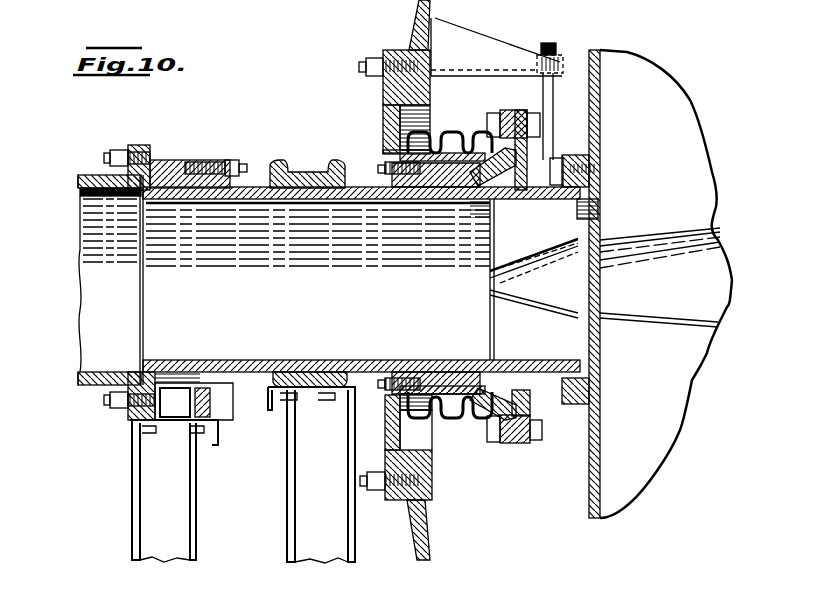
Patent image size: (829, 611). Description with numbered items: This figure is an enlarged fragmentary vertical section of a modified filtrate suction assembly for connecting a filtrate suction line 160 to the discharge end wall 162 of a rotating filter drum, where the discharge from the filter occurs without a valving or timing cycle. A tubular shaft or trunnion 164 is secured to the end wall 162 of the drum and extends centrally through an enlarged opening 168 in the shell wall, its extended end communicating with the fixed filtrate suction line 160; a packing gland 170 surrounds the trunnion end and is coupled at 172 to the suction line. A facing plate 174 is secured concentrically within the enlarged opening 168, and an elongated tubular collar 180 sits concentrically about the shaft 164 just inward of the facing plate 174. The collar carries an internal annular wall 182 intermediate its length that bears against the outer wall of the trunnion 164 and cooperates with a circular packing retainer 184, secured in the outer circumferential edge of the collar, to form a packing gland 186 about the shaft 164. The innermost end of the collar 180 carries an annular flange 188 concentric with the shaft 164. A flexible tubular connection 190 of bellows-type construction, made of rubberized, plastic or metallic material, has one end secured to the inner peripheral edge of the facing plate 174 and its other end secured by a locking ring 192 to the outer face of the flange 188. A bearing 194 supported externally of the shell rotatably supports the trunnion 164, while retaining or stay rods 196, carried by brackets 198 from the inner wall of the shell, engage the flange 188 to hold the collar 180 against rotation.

The filtrate suction line 160 is at (78, 186).
The discharge end wall of the rotary drum 162 is at (600, 193).
The tubular shaft or trunnion 164 is at (313, 205).
The enlarged opening 168 is at (440, 447).
The packing gland 170 is at (198, 162).
The coupling 172 is at (150, 165).
The facing plate 174 is at (385, 108).
The elongated tubular collar 180 is at (477, 160).
The internal annular wall 182 is at (488, 205).
The circular packing retainer 184 is at (388, 196).
The packing gland 186 is at (432, 176).
The annular flange 188 is at (540, 112).
The flexible tubular connection 190 is at (450, 133).
The locking ring 192 is at (520, 444).
The bearing 194 is at (298, 175).
The retaining or stay rods 196 is at (560, 80).
The brackets 198 is at (462, 36).